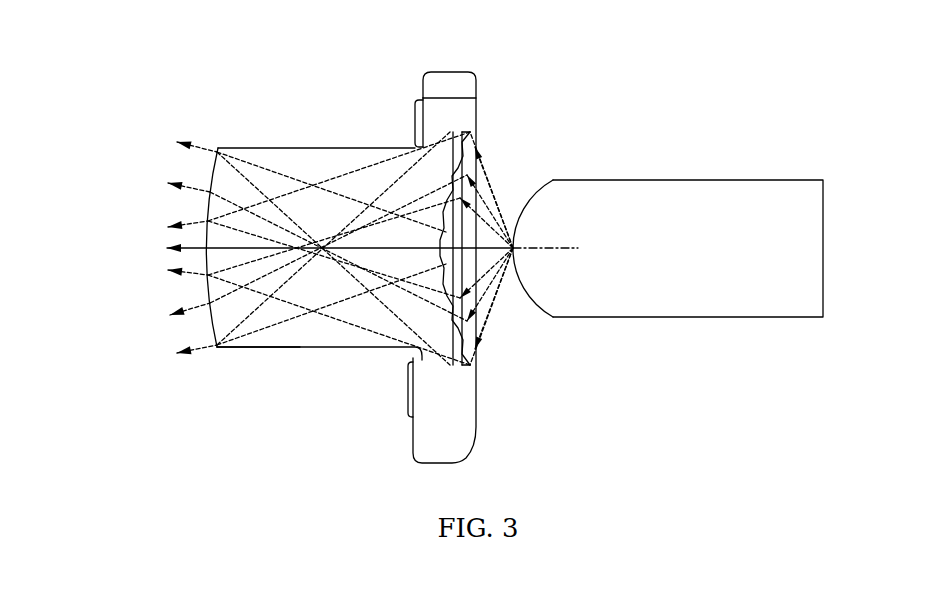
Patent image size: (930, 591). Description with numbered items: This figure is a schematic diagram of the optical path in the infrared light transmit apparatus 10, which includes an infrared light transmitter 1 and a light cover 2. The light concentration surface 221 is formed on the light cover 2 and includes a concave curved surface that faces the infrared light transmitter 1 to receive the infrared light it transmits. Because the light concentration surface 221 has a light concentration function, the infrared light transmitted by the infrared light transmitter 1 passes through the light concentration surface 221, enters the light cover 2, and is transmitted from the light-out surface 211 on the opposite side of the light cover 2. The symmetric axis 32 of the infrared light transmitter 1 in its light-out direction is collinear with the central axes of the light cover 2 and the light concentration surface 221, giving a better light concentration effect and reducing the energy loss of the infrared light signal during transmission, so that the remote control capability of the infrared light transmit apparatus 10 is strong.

The infrared light transmit apparatus 10 is at (545, 73).
The infrared light transmitter 1 is at (668, 225).
The symmetric axis 32 is at (543, 250).
The light cover 2 is at (318, 235).
The light-out surface 211 is at (212, 178).
The light concentration surface 221 is at (392, 346).